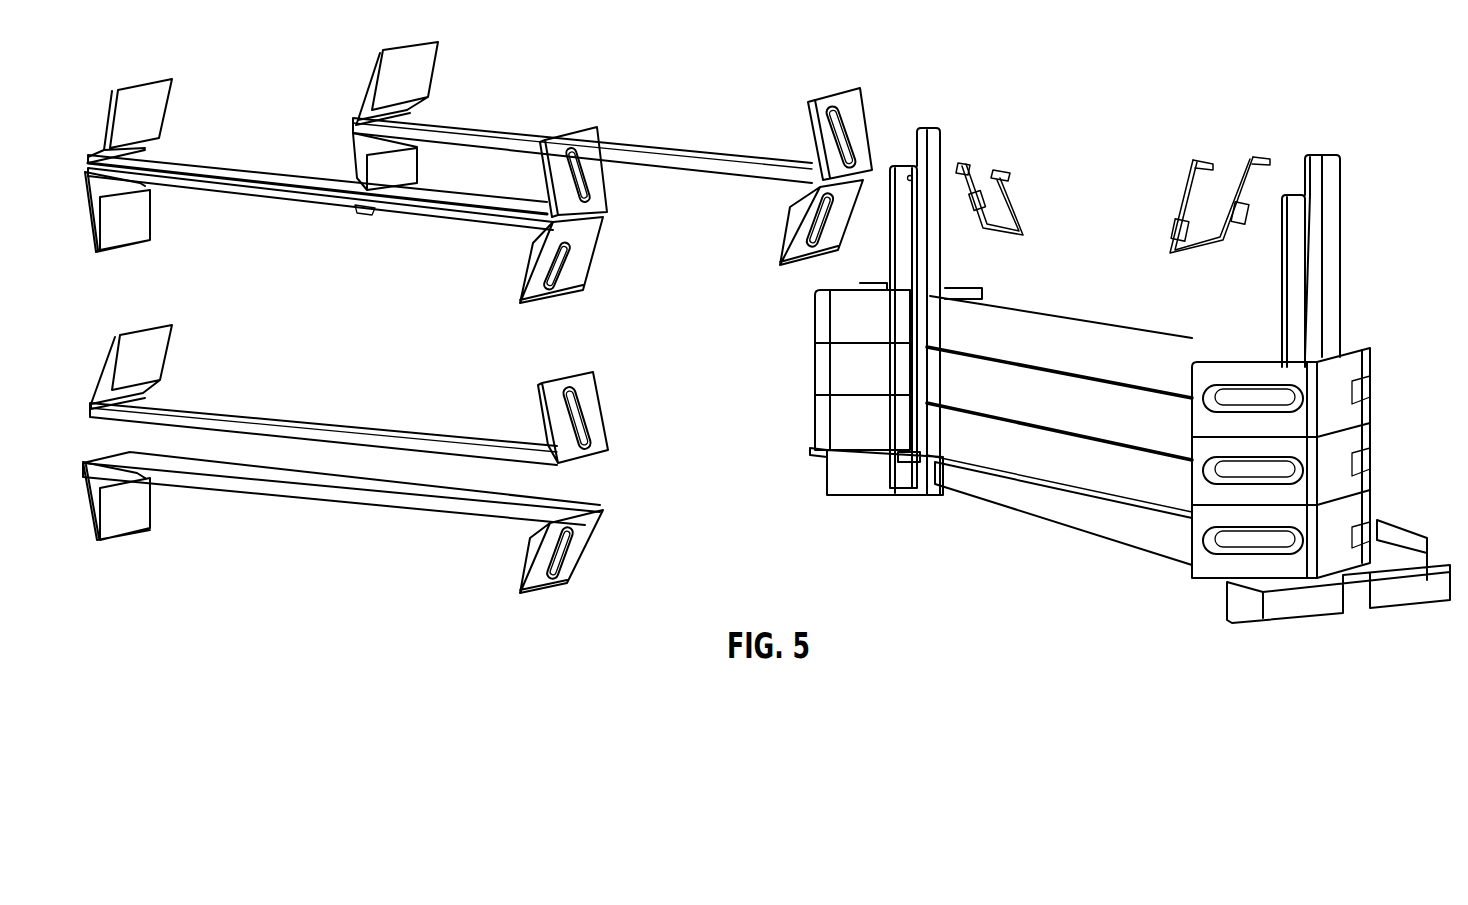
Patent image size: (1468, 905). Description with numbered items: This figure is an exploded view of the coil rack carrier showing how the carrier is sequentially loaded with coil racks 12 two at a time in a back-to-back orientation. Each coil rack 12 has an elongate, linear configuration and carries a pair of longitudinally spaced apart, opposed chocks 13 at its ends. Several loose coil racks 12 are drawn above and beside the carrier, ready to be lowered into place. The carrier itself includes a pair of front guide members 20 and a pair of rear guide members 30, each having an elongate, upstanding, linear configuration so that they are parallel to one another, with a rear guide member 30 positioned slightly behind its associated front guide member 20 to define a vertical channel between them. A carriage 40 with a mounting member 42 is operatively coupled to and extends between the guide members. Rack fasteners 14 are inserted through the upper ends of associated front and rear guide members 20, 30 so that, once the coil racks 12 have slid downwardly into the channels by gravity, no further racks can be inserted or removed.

The coil rack 12 is at (300, 490).
The chock 13 is at (1365, 492).
The rack fastener 14 is at (1190, 190).
The front guide member 20 is at (1298, 241).
The rear guide member 30 is at (1326, 262).
The carriage 40 is at (1215, 594).
The mounting member 42 is at (1043, 512).